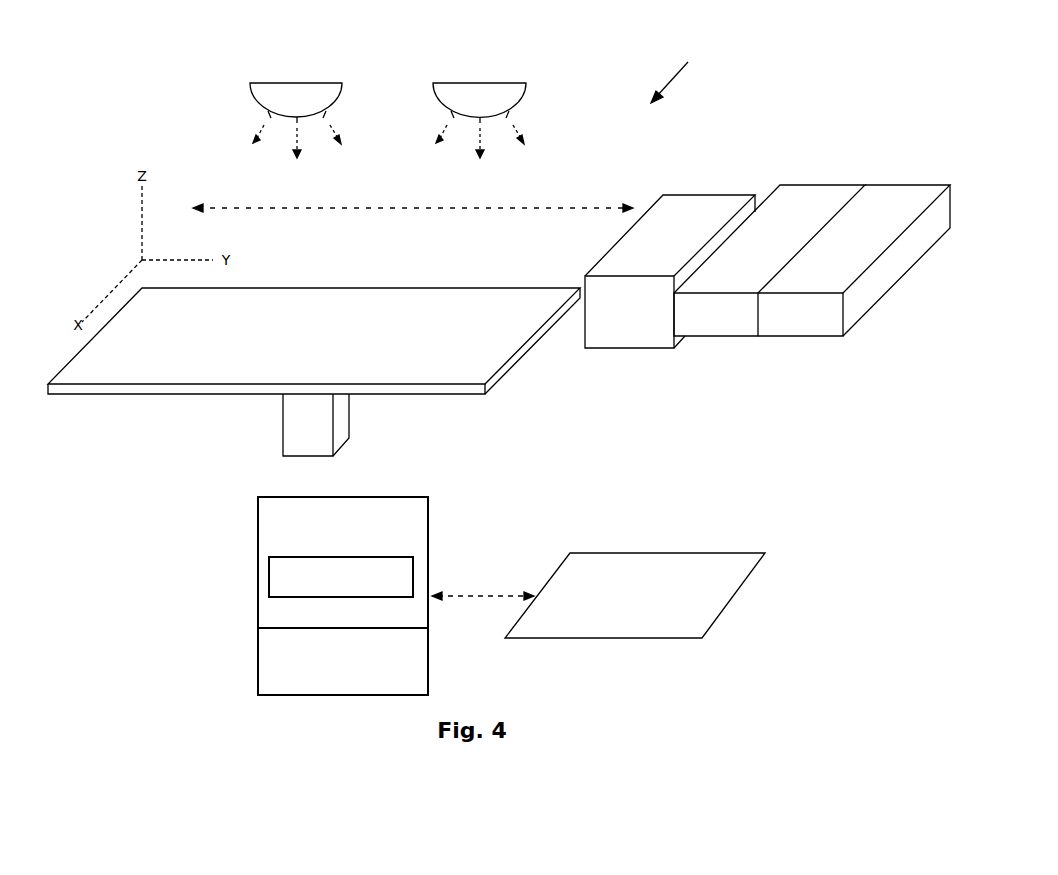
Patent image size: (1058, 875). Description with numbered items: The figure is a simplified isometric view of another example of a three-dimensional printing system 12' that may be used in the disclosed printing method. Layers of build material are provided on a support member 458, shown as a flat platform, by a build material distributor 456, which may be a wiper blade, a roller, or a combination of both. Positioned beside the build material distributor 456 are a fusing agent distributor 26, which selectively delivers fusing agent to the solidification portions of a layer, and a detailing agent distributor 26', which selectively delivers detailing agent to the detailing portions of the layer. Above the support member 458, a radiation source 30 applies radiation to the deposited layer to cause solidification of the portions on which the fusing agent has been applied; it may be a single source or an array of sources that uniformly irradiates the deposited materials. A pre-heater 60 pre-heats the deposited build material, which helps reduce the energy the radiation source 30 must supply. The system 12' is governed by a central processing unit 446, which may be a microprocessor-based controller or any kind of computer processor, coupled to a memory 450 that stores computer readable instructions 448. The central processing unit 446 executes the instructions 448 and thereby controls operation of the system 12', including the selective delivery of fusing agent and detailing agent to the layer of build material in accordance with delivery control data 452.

The radiation source 30 is at (297, 83).
The pre-heater 60 is at (480, 83).
The printing system 12' is at (680, 72).
The build material distributor 456 is at (710, 195).
The fusing agent distributor 26 is at (769, 241).
The detailing agent distributor 26' is at (854, 240).
The support member 458 is at (362, 288).
The memory 450 is at (257, 521).
The instructions 448 is at (269, 575).
The central processing unit 446 is at (258, 664).
The delivery control data 452 is at (668, 553).